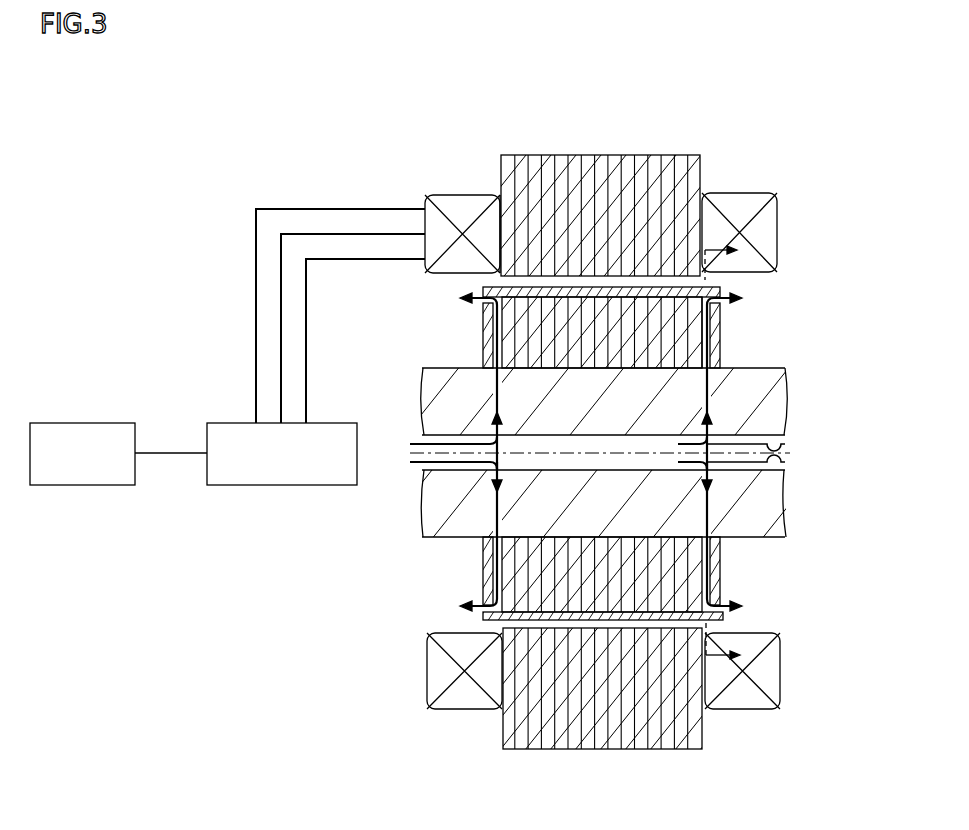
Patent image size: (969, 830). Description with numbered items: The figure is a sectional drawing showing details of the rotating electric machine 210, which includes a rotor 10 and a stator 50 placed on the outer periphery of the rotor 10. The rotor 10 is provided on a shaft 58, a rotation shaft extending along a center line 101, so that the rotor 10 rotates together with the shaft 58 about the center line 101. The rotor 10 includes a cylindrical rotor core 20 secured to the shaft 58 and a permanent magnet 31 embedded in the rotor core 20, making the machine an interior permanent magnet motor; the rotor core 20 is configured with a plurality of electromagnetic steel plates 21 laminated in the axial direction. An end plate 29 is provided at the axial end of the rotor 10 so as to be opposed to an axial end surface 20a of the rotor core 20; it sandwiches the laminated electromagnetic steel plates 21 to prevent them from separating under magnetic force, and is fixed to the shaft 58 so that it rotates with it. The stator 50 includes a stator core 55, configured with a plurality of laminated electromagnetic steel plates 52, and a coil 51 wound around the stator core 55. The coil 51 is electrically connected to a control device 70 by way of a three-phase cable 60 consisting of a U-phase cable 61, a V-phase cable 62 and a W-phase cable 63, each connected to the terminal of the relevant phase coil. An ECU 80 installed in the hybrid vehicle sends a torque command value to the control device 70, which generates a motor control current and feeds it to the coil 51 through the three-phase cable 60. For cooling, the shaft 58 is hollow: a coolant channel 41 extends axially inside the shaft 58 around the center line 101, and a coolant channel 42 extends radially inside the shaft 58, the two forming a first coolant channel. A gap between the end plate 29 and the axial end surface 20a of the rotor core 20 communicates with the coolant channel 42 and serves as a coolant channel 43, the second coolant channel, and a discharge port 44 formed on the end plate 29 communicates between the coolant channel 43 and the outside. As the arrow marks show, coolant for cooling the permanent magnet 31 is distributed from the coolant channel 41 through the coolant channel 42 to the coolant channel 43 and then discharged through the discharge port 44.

The rotating electric machine 210 is at (779, 101).
The stator 50 is at (710, 168).
The coil 51 is at (450, 203).
The electromagnetic steel plate 52 is at (647, 163).
The stator core 55 is at (500, 168).
The rotor 10 is at (455, 596).
The rotor core 20 is at (683, 358).
The axial end surface 20a is at (702, 335).
The electromagnetic steel plate 21 is at (510, 327).
The end plate 29 is at (715, 313).
The permanent magnet 31 is at (728, 303).
The coolant channel 41 is at (780, 437).
The coolant channel 42 is at (707, 502).
The coolant channel 43 is at (717, 600).
The discharge port 44 is at (482, 297).
The shaft 58 is at (765, 402).
The center line 101 is at (767, 465).
The three-phase cable 60 is at (332, 151).
The U-phase cable 61 is at (315, 209).
The V-phase cable 62 is at (294, 234).
The W-phase cable 63 is at (305, 283).
The control device 70 is at (338, 423).
The ECU 80 is at (113, 423).